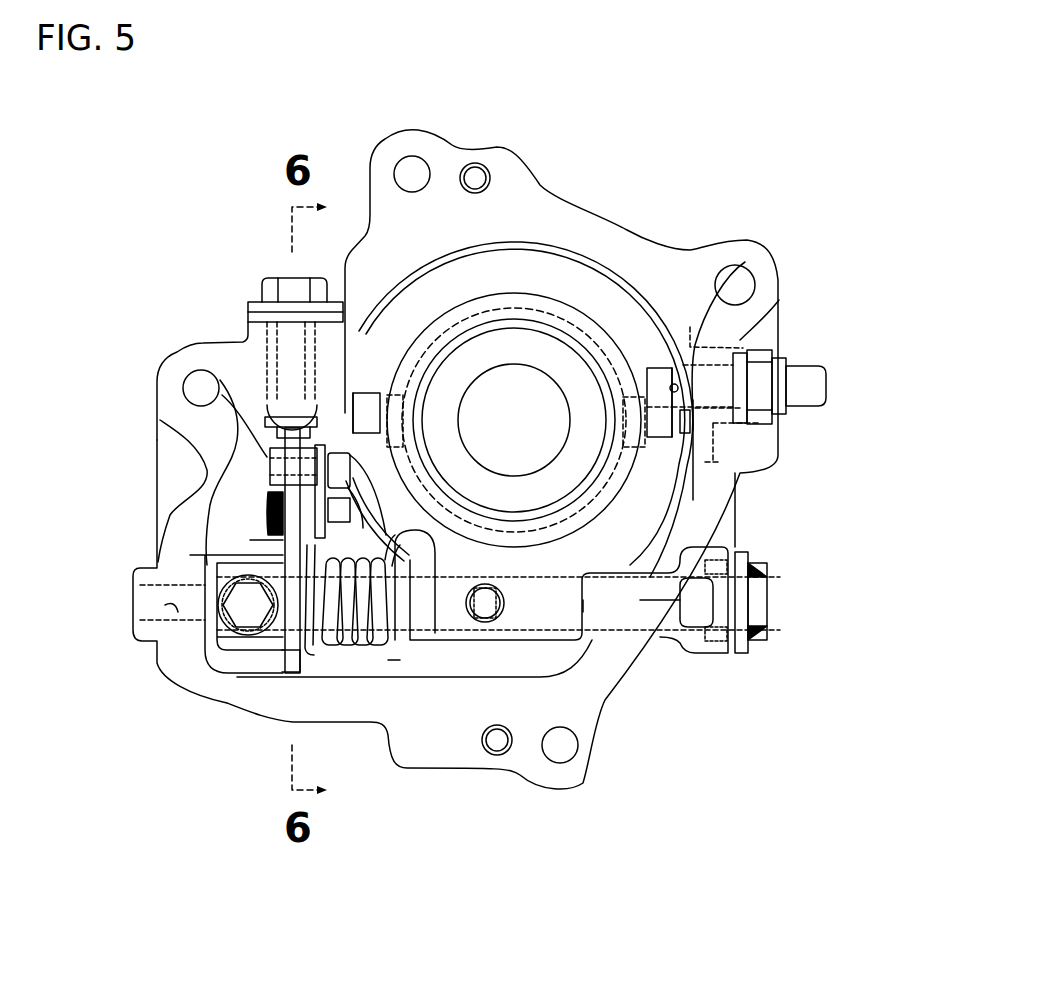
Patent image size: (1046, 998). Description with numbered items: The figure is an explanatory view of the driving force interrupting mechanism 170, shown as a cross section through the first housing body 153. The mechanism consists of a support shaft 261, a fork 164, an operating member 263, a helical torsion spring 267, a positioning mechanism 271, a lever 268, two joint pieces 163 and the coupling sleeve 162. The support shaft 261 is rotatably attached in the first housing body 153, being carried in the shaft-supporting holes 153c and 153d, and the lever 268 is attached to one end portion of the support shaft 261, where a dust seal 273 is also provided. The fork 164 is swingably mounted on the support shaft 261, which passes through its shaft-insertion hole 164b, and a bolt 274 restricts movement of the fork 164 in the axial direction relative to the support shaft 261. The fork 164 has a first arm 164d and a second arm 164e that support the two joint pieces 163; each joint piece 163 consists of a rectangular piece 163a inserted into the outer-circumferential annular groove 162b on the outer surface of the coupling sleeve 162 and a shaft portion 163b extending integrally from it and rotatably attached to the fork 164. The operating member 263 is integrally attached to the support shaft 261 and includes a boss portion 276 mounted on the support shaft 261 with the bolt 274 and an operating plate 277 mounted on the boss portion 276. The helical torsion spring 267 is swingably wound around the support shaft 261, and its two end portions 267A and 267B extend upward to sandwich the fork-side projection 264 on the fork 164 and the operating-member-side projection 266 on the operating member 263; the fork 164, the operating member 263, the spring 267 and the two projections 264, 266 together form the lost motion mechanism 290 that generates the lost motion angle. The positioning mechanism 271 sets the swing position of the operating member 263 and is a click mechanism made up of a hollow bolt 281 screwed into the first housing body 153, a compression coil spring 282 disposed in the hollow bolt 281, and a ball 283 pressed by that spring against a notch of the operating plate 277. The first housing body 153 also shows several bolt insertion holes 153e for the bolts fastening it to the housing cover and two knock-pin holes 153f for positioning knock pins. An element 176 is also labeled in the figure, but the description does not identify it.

The first housing body 153 is at (607, 232).
The shaft-supporting hole 153c is at (165, 606).
The shaft-supporting hole 153d is at (652, 630).
The bolt insertion hole 153e is at (416, 158).
The knock-pin hole 153f is at (480, 165).
The coupling sleeve 162 is at (517, 289).
The outer-circumferential annular groove 162b is at (522, 305).
The joint piece 163 is at (258, 434).
The rectangular piece 163a is at (393, 394).
The shaft portion 163b is at (360, 395).
The fork 164 is at (530, 650).
The shaft-insertion hole 164b is at (585, 625).
The first arm 164d is at (313, 473).
The second arm 164e is at (650, 482).
The driving force interrupting mechanism 170 is at (722, 750).
The adjusting bolt 176 is at (818, 387).
The support shaft 261 is at (757, 600).
The operating member 263 is at (214, 654).
The fork-side projection 264 is at (268, 467).
The operating-member-side projection 266 is at (290, 537).
The helical torsion spring 267 is at (331, 704).
The end portion 267A is at (303, 665).
The end portion 267B is at (420, 662).
The lever 268 is at (744, 655).
The positioning mechanism 271 is at (235, 301).
The dust seal 273 is at (722, 655).
The bolt 274 is at (247, 612).
The boss portion 276 is at (266, 652).
The operating plate 277 is at (293, 557).
The hollow bolt 281 is at (266, 293).
The compression coil spring 282 is at (280, 387).
The ball 283 is at (265, 410).
The lost motion mechanism 290 is at (396, 662).